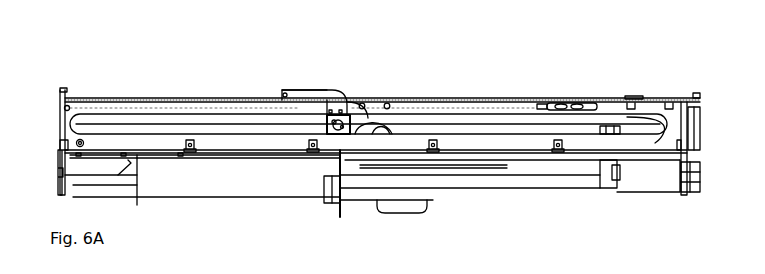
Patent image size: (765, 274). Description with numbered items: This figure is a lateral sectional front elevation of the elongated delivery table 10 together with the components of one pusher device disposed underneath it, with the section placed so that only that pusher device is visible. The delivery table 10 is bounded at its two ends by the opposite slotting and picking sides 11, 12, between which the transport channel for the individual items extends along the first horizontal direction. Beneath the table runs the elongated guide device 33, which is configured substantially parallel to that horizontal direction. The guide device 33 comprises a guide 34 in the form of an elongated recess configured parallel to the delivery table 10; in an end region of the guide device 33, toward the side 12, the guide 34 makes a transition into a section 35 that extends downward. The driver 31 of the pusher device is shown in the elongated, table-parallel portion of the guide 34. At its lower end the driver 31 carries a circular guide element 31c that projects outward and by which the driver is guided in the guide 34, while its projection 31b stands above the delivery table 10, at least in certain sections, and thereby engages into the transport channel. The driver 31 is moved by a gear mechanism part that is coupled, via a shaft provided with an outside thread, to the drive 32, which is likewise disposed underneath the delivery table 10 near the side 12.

The delivery table 10 is at (135, 98).
The slotting and picking side 11 is at (60, 94).
The slotting and picking side 12 is at (693, 98).
The driver 31 is at (338, 100).
The projection 31b is at (298, 95).
The circular guide element 31c is at (355, 122).
The drive 32 is at (633, 177).
The guide device 33 is at (172, 110).
The guide 34 is at (220, 113).
The section 35 is at (657, 143).